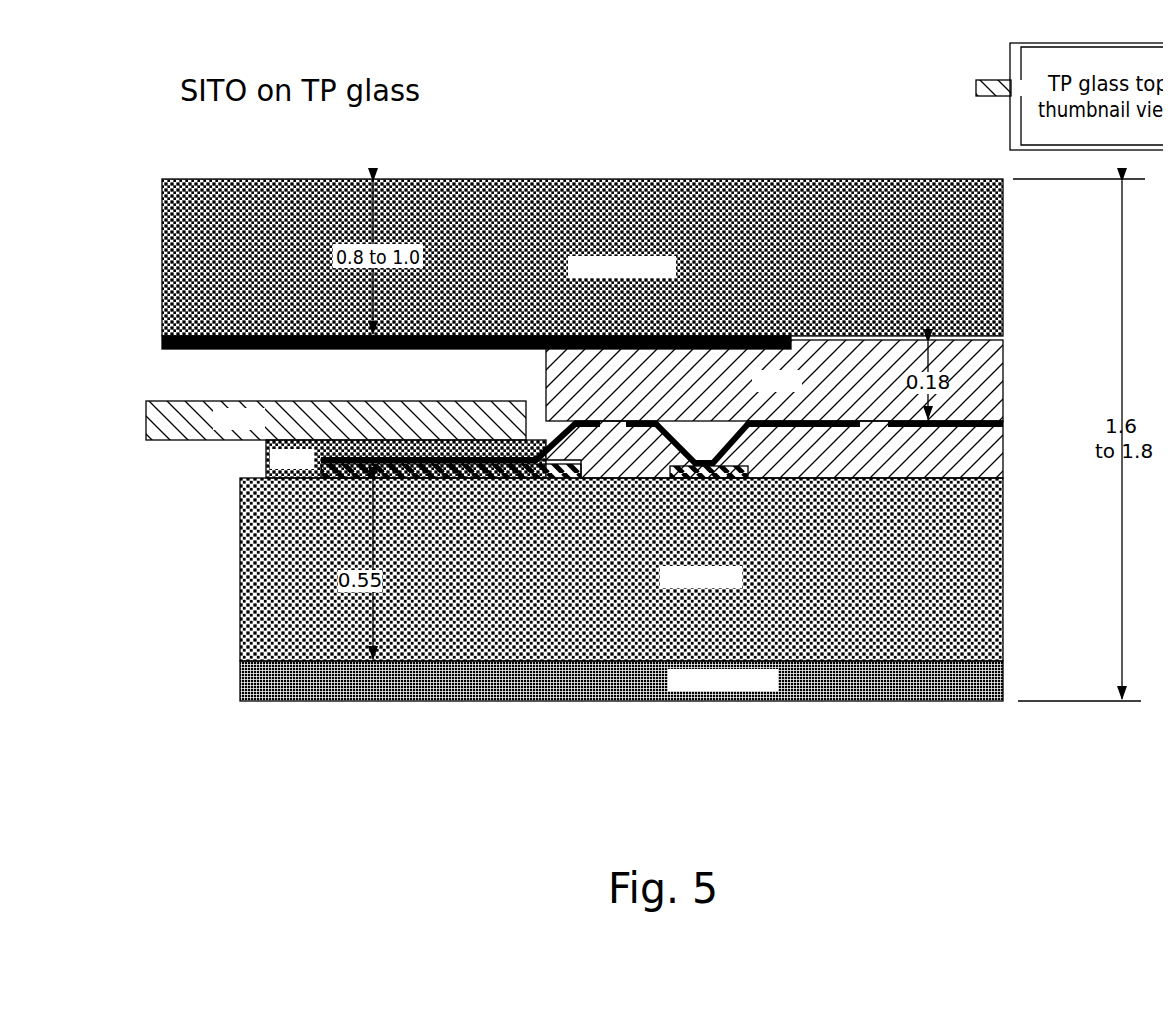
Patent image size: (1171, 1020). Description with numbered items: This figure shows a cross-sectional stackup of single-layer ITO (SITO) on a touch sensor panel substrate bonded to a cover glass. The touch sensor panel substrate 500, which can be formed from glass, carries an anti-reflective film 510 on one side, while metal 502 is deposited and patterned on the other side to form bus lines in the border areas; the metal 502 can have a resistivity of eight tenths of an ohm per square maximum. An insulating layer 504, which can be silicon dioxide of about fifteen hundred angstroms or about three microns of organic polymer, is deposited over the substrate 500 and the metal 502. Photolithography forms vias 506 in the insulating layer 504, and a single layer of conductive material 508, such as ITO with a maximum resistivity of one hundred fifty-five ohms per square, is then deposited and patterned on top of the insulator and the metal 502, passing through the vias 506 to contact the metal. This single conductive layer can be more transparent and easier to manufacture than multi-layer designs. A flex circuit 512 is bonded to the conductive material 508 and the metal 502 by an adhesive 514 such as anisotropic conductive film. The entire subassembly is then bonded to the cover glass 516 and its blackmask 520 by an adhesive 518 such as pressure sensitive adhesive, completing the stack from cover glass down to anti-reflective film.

The touch sensor panel substrate 500 is at (1000, 560).
The metal 502 is at (522, 474).
The insulating layer 504 is at (614, 462).
The vias 506 is at (740, 450).
The conductive material 508 is at (855, 452).
The anti-reflective film 510 is at (995, 676).
The flex circuit 512 is at (293, 393).
The adhesive 514 is at (258, 450).
The cover glass 516 is at (995, 288).
The adhesive 518 is at (995, 378).
The blackmask 520 is at (458, 342).